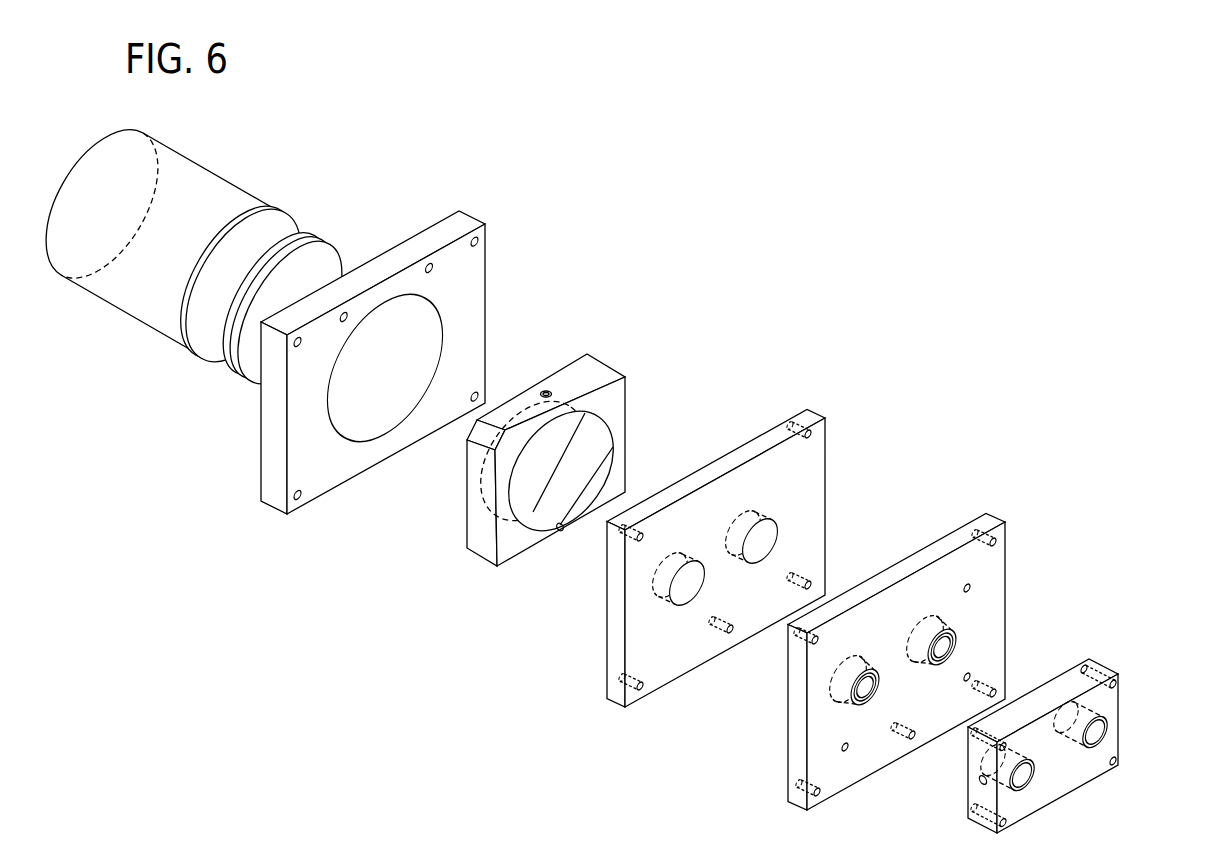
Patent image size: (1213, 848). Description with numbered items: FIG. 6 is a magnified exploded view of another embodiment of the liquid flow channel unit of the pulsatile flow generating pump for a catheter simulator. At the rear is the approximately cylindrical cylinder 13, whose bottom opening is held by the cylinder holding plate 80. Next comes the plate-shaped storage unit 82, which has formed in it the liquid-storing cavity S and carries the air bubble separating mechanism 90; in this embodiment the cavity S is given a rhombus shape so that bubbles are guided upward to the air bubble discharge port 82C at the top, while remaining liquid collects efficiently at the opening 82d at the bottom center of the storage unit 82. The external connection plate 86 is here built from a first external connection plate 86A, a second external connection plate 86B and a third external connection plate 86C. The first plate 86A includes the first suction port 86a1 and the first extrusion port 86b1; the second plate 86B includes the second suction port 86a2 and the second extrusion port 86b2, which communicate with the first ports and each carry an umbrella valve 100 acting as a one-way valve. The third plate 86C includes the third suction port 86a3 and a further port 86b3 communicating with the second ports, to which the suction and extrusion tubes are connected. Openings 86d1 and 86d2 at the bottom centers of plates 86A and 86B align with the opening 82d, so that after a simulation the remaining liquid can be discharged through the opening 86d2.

The cylinder 13 is at (120, 293).
The cylinder holding plate 80 is at (462, 221).
The storage unit 82 is at (548, 459).
The air bubble discharge port 82C is at (547, 389).
The opening 82d is at (561, 535).
The cavity S is at (556, 480).
The external connection plate 86 is at (860, 591).
The first external connection plate 86A is at (714, 528).
The second external connection plate 86B is at (893, 643).
The third external connection plate 86C is at (1083, 723).
The first suction port 86a1 is at (767, 541).
The first extrusion port 86b1 is at (680, 588).
The opening 86d1 is at (733, 632).
The second suction port 86a2 is at (950, 642).
The second extrusion port 86b2 is at (862, 689).
The opening 86d2 is at (912, 740).
The third suction port 86a3 is at (1097, 731).
The through hole 86b3 is at (1025, 775).
The umbrella valve 100 is at (932, 610).
The air bubble separating mechanism 90 is at (622, 481).